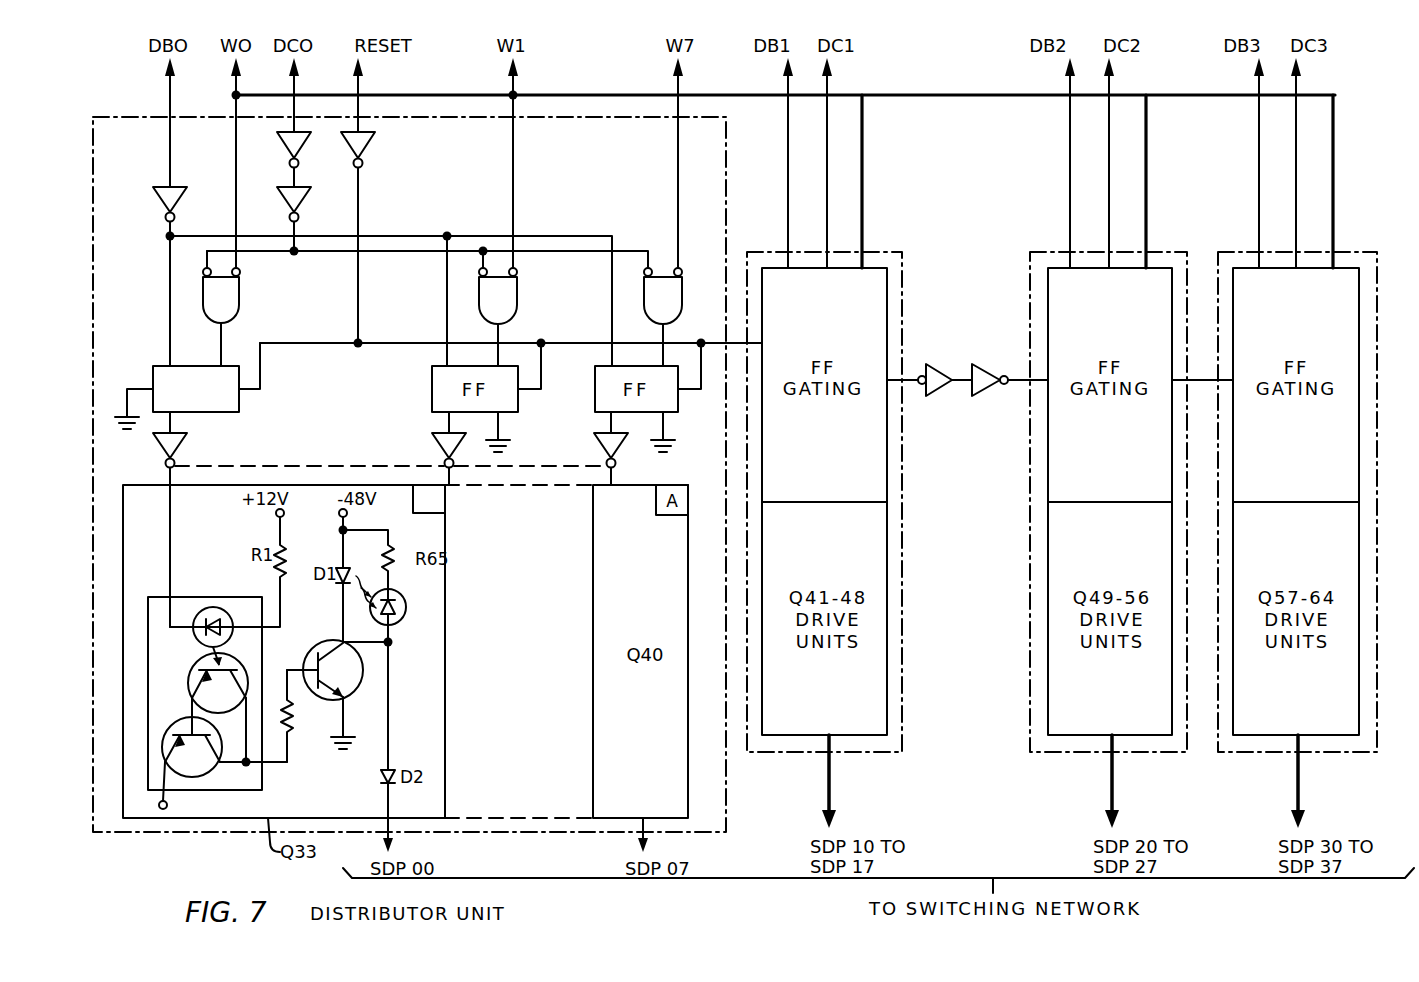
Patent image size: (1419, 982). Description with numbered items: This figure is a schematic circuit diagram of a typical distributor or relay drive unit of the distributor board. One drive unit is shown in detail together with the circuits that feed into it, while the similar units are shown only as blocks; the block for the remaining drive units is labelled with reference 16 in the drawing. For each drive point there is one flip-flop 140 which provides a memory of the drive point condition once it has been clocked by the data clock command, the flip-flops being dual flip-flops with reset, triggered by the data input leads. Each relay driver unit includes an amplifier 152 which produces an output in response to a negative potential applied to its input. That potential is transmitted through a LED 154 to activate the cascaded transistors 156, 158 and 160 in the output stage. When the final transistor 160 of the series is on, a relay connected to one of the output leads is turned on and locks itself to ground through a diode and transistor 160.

The drive unit (Q33 block) 16 is at (445, 718).
The flip-flop 140 is at (239, 412).
The amplifier 152 is at (233, 694).
The LED 154 is at (214, 607).
The transistor 156 is at (204, 660).
The transistor 158 is at (214, 769).
The transistor 160 is at (309, 648).